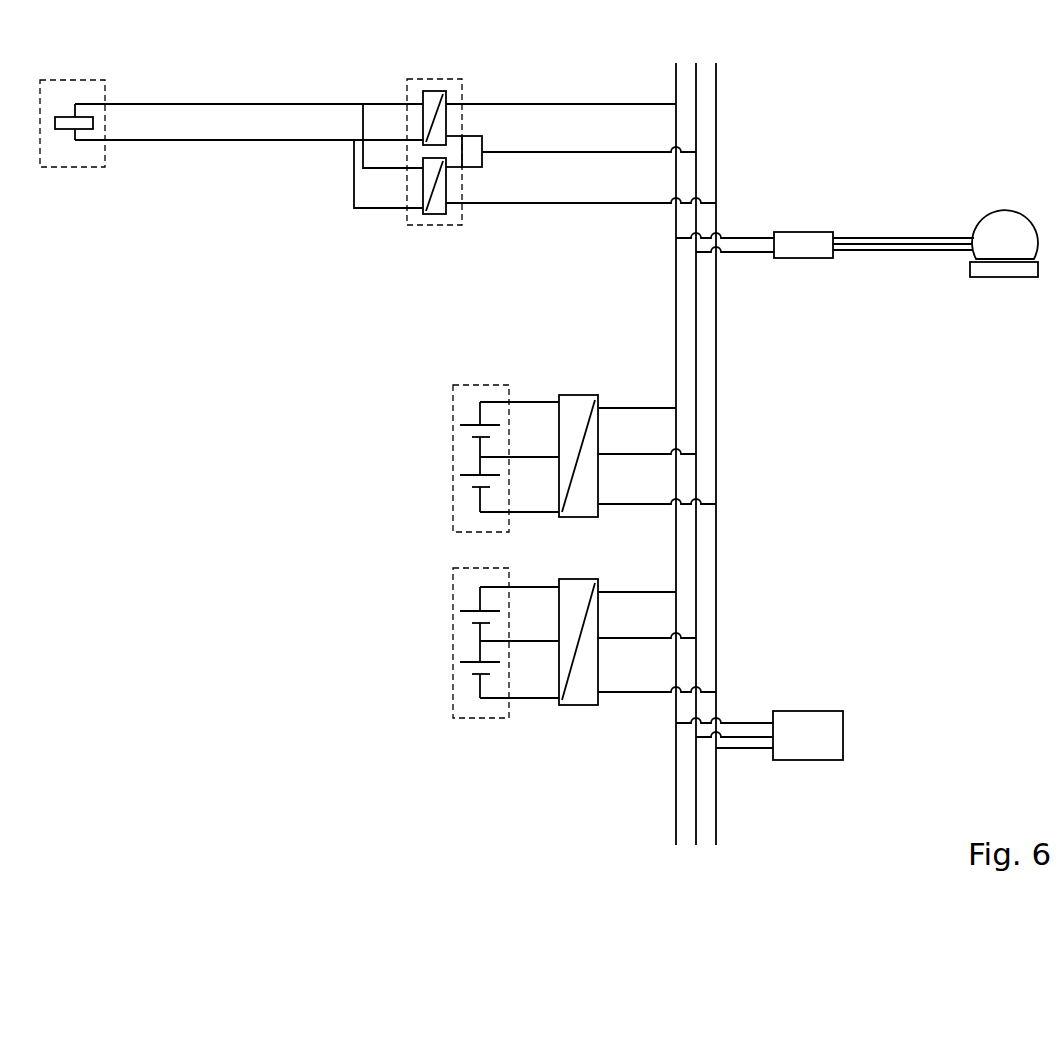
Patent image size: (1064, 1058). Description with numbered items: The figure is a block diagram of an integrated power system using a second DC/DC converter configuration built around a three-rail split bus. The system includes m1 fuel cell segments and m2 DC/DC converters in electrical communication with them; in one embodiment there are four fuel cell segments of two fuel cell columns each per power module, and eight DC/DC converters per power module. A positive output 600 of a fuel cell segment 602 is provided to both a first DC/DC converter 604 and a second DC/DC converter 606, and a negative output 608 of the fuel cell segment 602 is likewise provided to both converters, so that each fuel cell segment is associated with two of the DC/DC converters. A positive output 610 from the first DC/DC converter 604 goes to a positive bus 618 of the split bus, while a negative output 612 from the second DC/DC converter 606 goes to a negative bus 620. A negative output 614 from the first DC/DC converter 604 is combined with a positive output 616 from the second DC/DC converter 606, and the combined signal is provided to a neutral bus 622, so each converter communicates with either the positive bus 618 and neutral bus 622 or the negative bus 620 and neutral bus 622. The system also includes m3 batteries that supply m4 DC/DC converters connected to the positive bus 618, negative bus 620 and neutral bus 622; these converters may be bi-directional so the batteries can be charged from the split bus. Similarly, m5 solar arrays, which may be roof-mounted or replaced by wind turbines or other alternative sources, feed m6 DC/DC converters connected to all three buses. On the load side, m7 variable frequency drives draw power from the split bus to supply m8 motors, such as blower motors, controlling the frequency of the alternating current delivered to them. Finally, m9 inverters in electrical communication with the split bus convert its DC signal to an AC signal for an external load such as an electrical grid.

The positive output 600 is at (152, 102).
The fuel cell segment 602 is at (64, 115).
The first DC/DC converter 604 is at (440, 92).
The second DC/DC converter 606 is at (445, 217).
The negative output 608 is at (145, 140).
The positive output 610 is at (532, 102).
The negative output 612 is at (570, 202).
The negative output 614 is at (475, 136).
The positive output 616 is at (482, 167).
The positive bus 618 is at (675, 73).
The negative bus 620 is at (717, 145).
The neutral bus 622 is at (697, 97).
The fuel cell segments m1 is at (57, 170).
The DC/DC converters m2 is at (412, 228).
The batteries m3 is at (453, 390).
The DC/DC converters m4 is at (578, 395).
The solar arrays m5 is at (452, 583).
The DC/DC converters m6 is at (587, 579).
The variable frequency drives m7 is at (808, 230).
The motors m8 is at (990, 212).
The inverters m9 is at (808, 710).